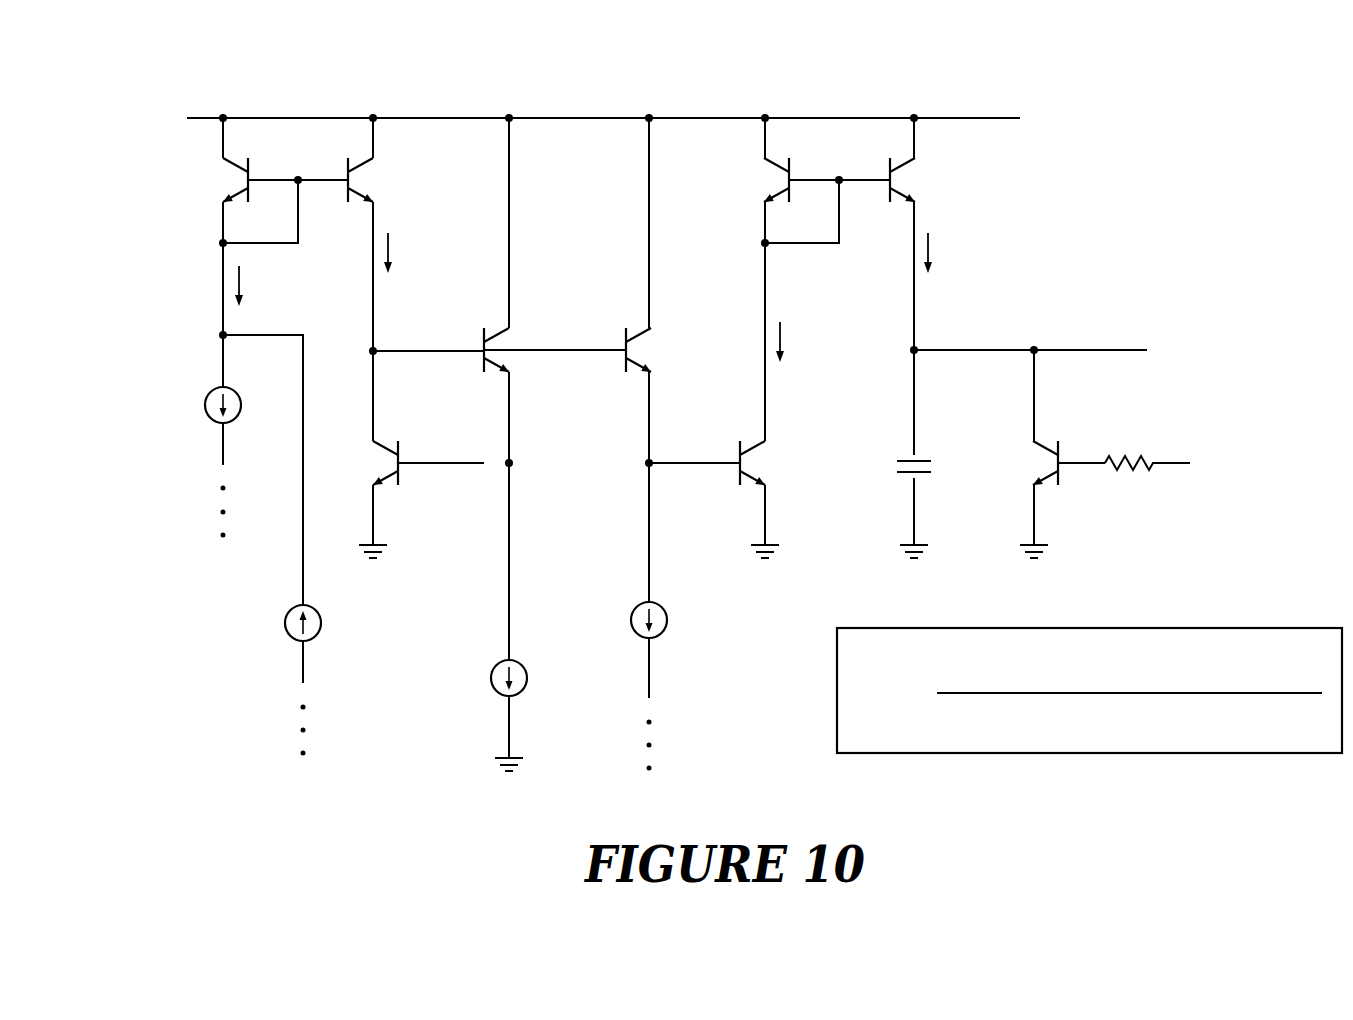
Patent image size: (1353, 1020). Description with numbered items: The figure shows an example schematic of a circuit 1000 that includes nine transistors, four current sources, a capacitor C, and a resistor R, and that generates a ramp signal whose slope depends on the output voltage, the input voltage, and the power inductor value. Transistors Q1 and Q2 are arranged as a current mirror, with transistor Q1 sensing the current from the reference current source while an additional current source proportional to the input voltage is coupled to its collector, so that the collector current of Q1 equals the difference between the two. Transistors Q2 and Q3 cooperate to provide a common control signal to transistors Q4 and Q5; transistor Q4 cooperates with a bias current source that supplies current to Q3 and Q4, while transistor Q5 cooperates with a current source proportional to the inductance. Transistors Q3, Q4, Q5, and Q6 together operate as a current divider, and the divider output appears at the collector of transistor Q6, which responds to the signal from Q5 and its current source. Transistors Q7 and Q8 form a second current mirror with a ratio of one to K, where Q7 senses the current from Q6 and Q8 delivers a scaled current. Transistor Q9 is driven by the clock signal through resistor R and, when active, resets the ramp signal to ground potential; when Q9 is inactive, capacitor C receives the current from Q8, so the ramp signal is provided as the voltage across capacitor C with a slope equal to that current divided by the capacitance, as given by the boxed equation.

The circuit 1000 is at (1234, 109).
The transistor Q1 is at (219, 180).
The transistor Q2 is at (380, 180).
The transistor Q3 is at (368, 463).
The transistor Q4 is at (516, 346).
The transistor Q5 is at (657, 350).
The transistor Q6 is at (773, 463).
The transistor Q7 is at (795, 217).
The transistor Q8 is at (921, 181).
The transistor Q9 is at (1054, 482).
The capacitor C is at (903, 465).
The resistor R is at (1147, 449).